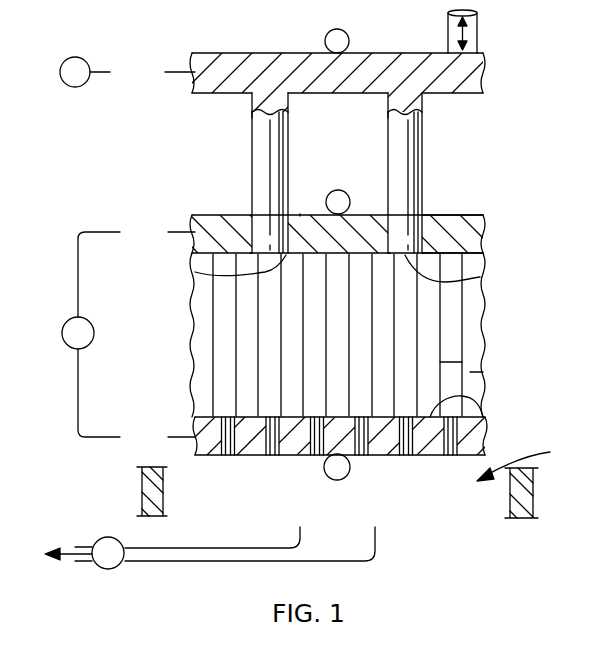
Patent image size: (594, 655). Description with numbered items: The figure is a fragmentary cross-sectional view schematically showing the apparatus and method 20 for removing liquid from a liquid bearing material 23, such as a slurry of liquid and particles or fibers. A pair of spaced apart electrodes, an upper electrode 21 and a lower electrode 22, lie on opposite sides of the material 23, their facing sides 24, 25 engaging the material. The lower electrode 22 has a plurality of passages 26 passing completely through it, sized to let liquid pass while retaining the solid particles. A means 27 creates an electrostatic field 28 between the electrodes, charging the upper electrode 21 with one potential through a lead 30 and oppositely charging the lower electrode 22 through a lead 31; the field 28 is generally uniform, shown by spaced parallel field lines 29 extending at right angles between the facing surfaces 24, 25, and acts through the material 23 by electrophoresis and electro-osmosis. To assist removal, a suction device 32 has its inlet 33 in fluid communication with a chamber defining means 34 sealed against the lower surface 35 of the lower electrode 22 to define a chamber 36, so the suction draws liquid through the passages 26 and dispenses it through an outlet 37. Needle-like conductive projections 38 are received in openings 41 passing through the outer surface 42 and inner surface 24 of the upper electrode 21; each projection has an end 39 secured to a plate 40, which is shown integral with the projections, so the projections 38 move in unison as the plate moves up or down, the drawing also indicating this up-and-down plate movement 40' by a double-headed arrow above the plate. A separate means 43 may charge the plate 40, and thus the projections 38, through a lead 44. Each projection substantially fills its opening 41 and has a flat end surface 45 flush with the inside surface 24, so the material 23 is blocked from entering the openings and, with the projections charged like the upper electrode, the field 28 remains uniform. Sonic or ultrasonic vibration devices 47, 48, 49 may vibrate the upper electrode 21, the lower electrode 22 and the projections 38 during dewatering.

The apparatus and method 20 is at (530, 78).
The upper electrode 21 is at (456, 217).
The lower electrode 22 is at (470, 436).
The liquid bearing material 23 is at (470, 372).
The facing side of upper electrode 24 is at (458, 258).
The facing side of lower electrode 25 is at (481, 399).
The passages 26 is at (290, 458).
The means for creating electrostatic field 27 is at (64, 310).
The electrostatic field 28 is at (450, 328).
The field lines 29 is at (440, 362).
The lead 30 is at (178, 232).
The lead 31 is at (185, 437).
The suction device 32 is at (112, 568).
The inlet 33 is at (128, 546).
The chamber defining means 34 is at (533, 497).
The lower surface of lower electrode 35 is at (430, 458).
The chamber 36 is at (531, 462).
The outlet 37 is at (92, 546).
The needle-like projections 38 is at (256, 140).
The end of projection 39 is at (388, 101).
The plate 40 is at (355, 66).
The actuator 40' is at (493, 30).
The openings 41 is at (250, 248).
The outer surface of upper electrode 42 is at (302, 215).
The separate charging means 43 is at (80, 57).
The lead 44 is at (178, 72).
The flat end surface 45 is at (195, 272).
The vibration imparting device 47 is at (337, 190).
The vibration imparting device 48 is at (340, 480).
The vibration imparting device 49 is at (328, 32).